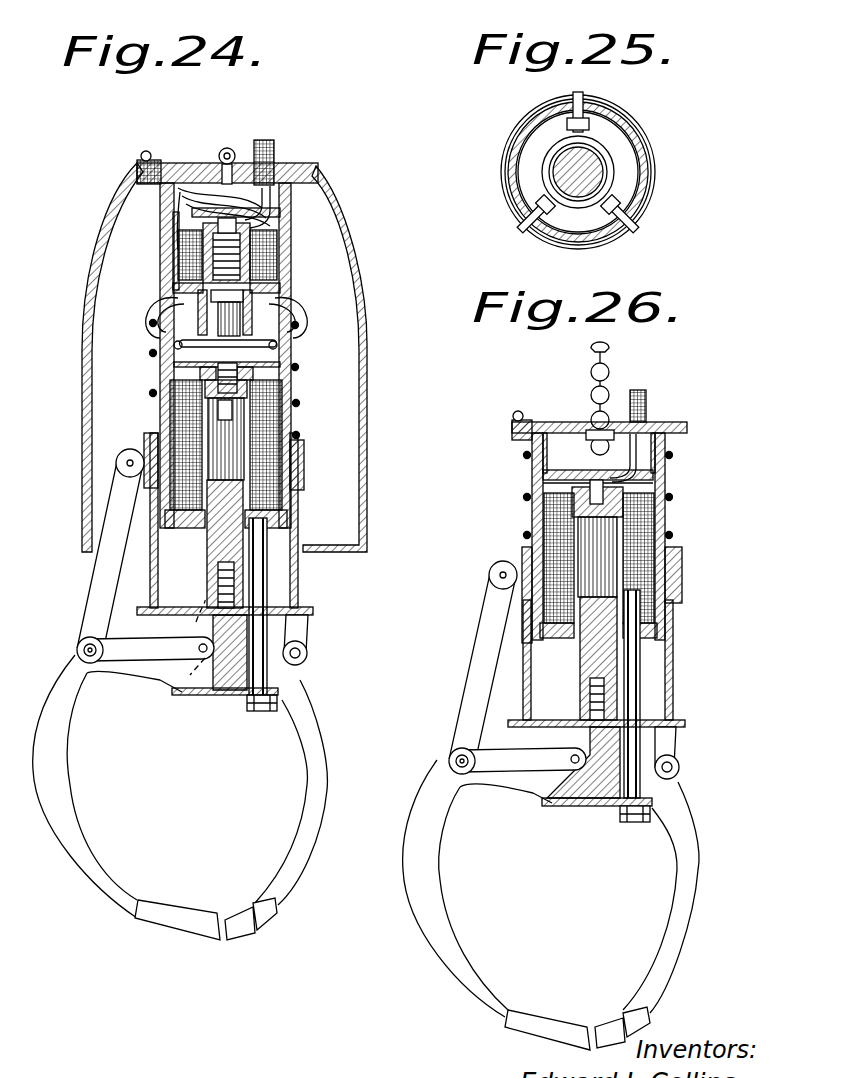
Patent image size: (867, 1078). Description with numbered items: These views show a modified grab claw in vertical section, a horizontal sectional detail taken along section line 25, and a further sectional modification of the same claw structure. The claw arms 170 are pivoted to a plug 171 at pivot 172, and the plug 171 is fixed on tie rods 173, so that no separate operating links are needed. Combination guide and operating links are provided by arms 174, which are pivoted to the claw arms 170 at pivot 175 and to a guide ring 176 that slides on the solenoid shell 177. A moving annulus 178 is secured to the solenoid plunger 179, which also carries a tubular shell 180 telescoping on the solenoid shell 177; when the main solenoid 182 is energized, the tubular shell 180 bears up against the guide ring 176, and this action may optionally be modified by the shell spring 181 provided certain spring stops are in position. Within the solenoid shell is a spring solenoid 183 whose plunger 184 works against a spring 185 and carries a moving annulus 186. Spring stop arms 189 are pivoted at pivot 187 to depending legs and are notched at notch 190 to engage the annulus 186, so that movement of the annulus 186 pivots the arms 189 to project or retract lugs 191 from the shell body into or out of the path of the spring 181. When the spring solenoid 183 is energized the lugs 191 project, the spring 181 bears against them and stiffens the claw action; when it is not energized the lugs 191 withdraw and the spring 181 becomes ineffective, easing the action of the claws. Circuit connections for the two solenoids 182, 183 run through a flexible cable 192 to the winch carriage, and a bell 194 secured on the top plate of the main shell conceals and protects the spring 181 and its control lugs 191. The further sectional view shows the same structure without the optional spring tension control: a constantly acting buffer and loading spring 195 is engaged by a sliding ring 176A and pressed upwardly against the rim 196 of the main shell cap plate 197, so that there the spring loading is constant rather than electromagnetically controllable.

In FIG. 24, the claw arms 170 is at (58, 762).
In FIG. 24, the plug 171 is at (215, 695).
In FIG. 24, the pivot 172 is at (199, 648).
In FIG. 24, the tie rods 173 is at (263, 580).
In FIG. 24, the arms 174 is at (100, 584).
In FIG. 24, the pivot 175 is at (84, 650).
In FIG. 24, the guide ring 176 is at (150, 432).
In FIG. 26, the sliding ring 176A is at (682, 568).
In FIG. 24, the solenoid shell 177 is at (282, 420).
In FIG. 24, the moving annulus 178 is at (312, 611).
In FIG. 24, the solenoid plunger 179 is at (207, 572).
In FIG. 24, the tubular shell 180 is at (298, 538).
In FIG. 24, the shell spring 181 is at (298, 375).
In FIG. 25, the shell spring 181 is at (650, 185).
In FIG. 24, the main solenoid 182 is at (178, 400).
In FIG. 24, the spring solenoid 183 is at (272, 252).
In FIG. 24, the plunger 184 is at (227, 296).
In FIG. 25, the plunger 184 is at (553, 168).
In FIG. 24, the spring 185 is at (240, 262).
In FIG. 24, the moving annulus 186 is at (236, 331).
In FIG. 25, the moving annulus 186 is at (603, 148).
In FIG. 24, the pivot 187 is at (178, 350).
In FIG. 24, the spring stop arms 189 is at (282, 338).
In FIG. 24, the notch 190 is at (225, 350).
In FIG. 24, the lugs 191 is at (146, 322).
In FIG. 25, the lugs 191 is at (520, 200).
In FIG. 24, the flexible cable 192 is at (274, 150).
In FIG. 24, the bell 194 is at (360, 278).
In FIG. 26, the buffer and loading spring 195 is at (673, 495).
In FIG. 26, the rim 196 is at (687, 440).
In FIG. 26, the main shell cap plate 197 is at (588, 432).
In FIG. 24, the section line 25 is at (160, 296).